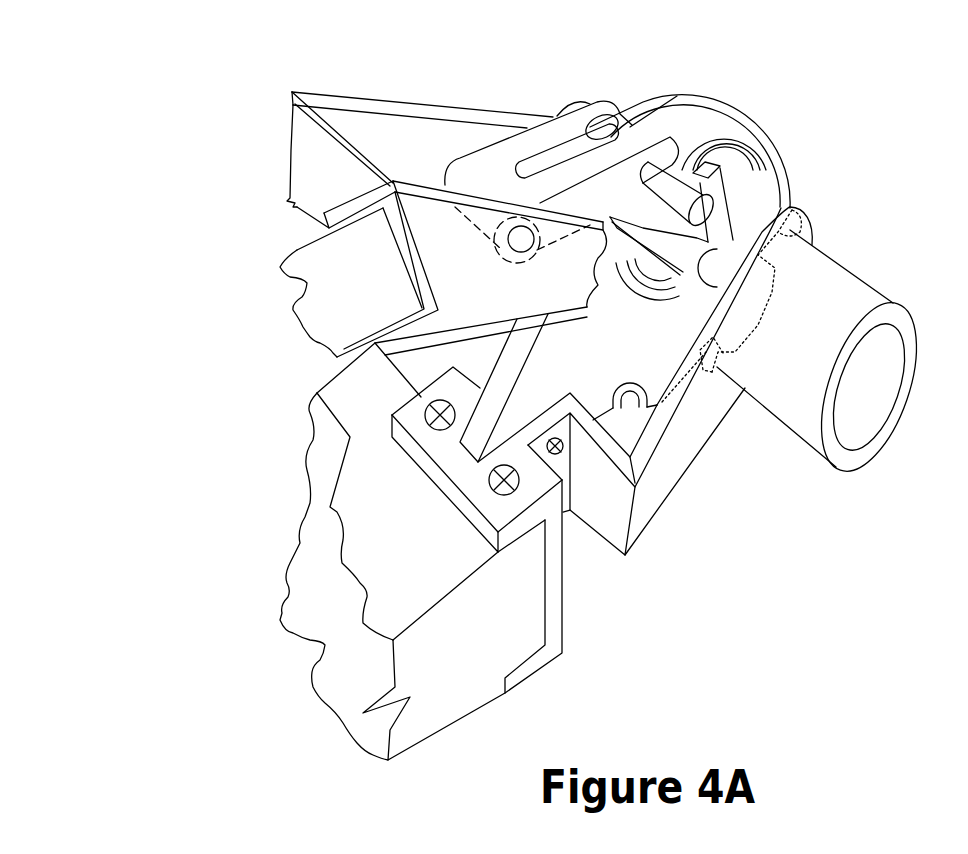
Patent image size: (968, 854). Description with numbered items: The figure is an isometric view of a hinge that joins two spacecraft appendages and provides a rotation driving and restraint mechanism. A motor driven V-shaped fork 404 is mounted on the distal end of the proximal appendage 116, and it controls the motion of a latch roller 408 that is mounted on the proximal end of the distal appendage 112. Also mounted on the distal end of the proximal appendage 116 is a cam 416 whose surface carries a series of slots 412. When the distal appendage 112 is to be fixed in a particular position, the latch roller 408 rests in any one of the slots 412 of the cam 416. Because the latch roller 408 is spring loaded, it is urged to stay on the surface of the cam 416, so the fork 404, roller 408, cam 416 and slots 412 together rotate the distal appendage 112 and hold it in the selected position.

The distal appendage 112 is at (340, 192).
The proximal appendage 116 is at (393, 578).
The cam 416 is at (400, 358).
The latch roller 408 is at (610, 137).
The V-shaped fork 404 is at (722, 217).
The slots 412 is at (778, 257).